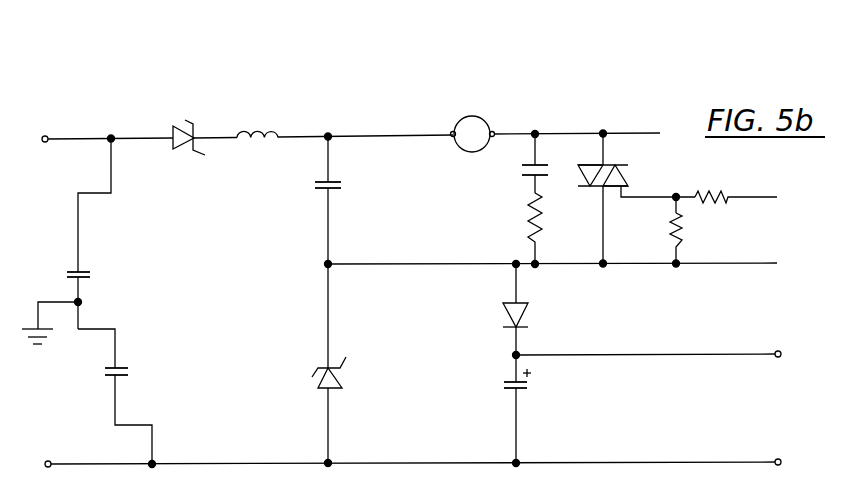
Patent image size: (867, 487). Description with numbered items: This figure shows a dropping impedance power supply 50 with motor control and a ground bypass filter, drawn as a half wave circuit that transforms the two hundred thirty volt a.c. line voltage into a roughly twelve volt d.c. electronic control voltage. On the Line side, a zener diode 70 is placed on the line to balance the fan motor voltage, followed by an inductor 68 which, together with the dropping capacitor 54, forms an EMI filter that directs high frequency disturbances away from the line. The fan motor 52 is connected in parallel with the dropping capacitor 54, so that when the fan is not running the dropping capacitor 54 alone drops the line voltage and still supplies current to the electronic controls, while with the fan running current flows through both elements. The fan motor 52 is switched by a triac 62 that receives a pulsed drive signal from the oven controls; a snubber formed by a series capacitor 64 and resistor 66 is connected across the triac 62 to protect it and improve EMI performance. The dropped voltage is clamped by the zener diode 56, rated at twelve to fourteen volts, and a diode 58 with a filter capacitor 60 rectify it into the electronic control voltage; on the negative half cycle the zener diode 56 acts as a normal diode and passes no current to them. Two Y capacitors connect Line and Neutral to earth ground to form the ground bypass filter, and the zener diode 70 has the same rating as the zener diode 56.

The dropping impedance power supply 50 is at (482, 57).
The fan motor 52 is at (472, 116).
The dropping capacitor 54 is at (336, 181).
The zener diode 56 is at (330, 390).
The diode 58 is at (528, 303).
The filter capacitor 60 is at (525, 392).
The triac 62 is at (612, 165).
The capacitor 64 is at (526, 183).
The resistor 66 is at (528, 224).
The inductor 68 is at (256, 125).
The zener diode 70 is at (181, 118).